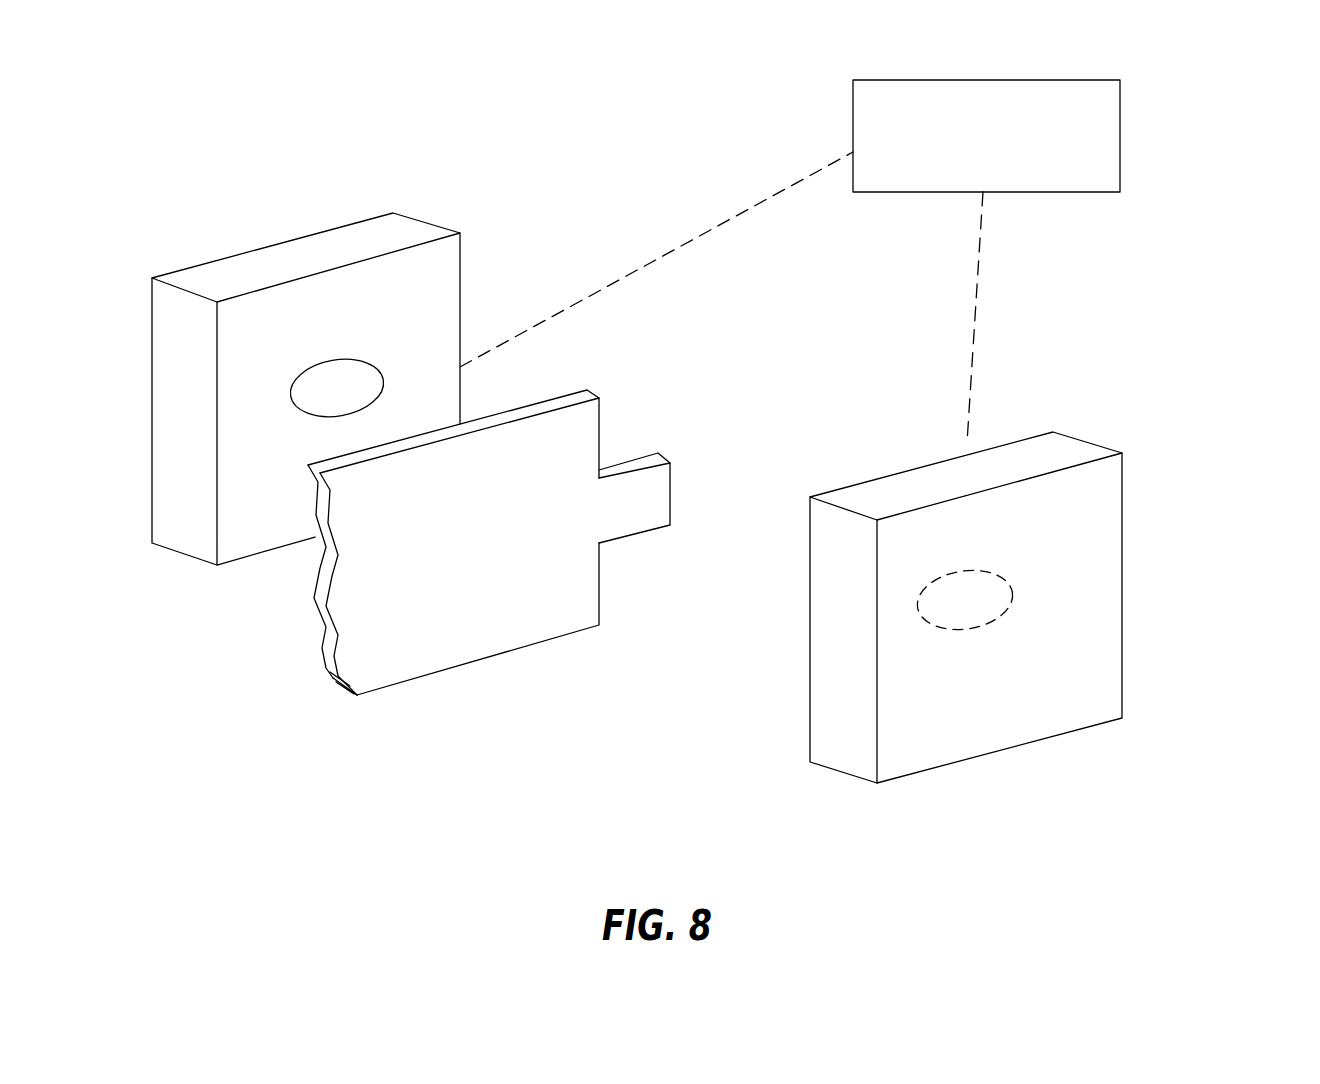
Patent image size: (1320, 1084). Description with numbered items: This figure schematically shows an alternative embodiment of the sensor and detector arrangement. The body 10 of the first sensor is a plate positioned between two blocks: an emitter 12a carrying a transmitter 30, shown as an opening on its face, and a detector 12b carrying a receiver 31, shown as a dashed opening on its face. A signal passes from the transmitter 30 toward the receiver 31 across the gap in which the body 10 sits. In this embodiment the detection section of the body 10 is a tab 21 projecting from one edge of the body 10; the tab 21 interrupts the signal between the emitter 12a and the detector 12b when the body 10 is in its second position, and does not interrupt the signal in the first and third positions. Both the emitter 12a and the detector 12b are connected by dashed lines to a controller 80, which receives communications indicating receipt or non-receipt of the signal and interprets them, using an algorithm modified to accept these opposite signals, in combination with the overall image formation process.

The emitter 12a is at (425, 218).
The detector 12b is at (1122, 510).
The transmitter 30 is at (320, 417).
The receiver 31 is at (985, 622).
The body 10 is at (548, 642).
The tab 21 is at (637, 493).
The controller 80 is at (967, 168).